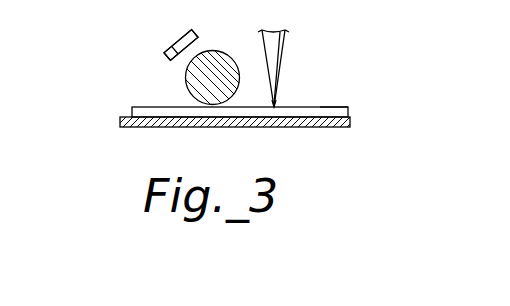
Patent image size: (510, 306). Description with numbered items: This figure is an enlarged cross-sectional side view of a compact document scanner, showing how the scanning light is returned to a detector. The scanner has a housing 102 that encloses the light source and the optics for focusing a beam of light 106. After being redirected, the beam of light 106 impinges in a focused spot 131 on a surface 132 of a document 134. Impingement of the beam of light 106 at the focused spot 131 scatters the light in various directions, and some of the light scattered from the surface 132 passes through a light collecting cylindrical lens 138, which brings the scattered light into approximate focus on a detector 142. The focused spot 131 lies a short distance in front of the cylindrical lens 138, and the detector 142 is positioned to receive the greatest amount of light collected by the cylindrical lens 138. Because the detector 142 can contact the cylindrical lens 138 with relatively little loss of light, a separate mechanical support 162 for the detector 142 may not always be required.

The housing 102 is at (327, 127).
The surface 132 is at (147, 107).
The light collecting cylindrical lens 138 is at (185, 80).
The detector 142 is at (197, 38).
The mechanical support 162 is at (178, 37).
The beam of light 106 is at (283, 60).
The focused spot 131 is at (276, 102).
The document 134 is at (336, 107).